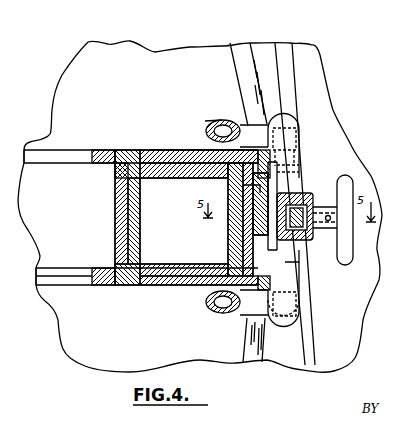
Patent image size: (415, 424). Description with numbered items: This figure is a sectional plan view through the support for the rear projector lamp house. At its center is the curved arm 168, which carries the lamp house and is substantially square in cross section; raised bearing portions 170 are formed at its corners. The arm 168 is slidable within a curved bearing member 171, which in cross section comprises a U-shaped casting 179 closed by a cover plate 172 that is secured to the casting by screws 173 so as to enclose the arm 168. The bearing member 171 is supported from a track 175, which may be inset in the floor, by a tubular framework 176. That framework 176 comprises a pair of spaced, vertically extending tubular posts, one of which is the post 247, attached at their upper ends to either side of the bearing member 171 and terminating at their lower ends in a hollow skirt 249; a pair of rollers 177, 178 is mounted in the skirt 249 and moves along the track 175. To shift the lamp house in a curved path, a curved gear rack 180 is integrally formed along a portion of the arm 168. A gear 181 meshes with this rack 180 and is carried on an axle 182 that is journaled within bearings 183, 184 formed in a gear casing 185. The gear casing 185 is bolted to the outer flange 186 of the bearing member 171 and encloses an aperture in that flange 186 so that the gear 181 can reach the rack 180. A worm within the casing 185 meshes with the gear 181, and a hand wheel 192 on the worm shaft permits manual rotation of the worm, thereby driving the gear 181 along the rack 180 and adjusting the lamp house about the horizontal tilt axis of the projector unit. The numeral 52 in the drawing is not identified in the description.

The bracket body 52 is at (204, 45).
The track 175 is at (293, 100).
The curved bearing member 171 is at (110, 203).
The screws 173 is at (105, 285).
The raised bearing portions 170 is at (139, 141).
The curved arm 168 is at (185, 177).
The U-shaped casting 179 is at (190, 150).
The curved gear rack 180 is at (253, 224).
The gear 181 is at (253, 239).
The bearing 184 is at (255, 189).
The roller 178 is at (230, 186).
The axle 182 is at (300, 184).
The gear casing 185 is at (300, 196).
The bearing 183 is at (300, 168).
The hand wheel 192 is at (346, 180).
The tubular framework 176 is at (236, 121).
The tubular post 247 is at (208, 119).
The outer flange 186 is at (262, 153).
The cover plate 172 is at (192, 287).
The roller 177 is at (301, 298).
The hollow skirt 249 is at (300, 315).